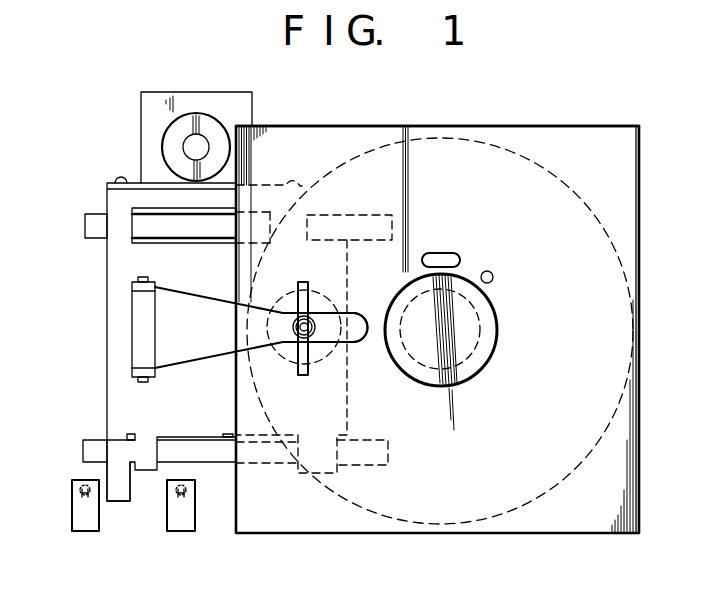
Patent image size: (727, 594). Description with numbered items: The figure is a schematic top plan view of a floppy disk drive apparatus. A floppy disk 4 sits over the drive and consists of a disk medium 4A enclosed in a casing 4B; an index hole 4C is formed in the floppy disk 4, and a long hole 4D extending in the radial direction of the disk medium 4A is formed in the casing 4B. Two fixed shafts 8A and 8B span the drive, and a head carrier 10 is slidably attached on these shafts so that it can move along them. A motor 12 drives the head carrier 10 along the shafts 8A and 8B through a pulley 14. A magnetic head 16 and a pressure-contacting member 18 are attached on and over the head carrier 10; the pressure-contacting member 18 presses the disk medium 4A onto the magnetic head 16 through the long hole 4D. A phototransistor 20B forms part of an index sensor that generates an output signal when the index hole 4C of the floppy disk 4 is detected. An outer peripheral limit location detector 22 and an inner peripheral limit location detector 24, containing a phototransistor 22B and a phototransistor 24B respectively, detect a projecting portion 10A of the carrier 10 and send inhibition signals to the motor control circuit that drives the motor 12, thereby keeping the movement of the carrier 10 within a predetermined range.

The floppy disk 4 is at (583, 126).
The disk medium 4A is at (596, 220).
The casing 4B is at (483, 126).
The index hole 4C is at (491, 270).
The long hole 4D is at (362, 312).
The fixed shaft 8A is at (85, 228).
The fixed shaft 8B is at (84, 440).
The head carrier 10 is at (107, 322).
The projecting portion 10A is at (118, 492).
The motor 12 is at (152, 122).
The pulley 14 is at (208, 122).
The magnetic head 16 is at (318, 357).
The pressure-contacting member 18 is at (200, 350).
The phototransistor 20B is at (438, 252).
The outer peripheral limit location detector 22 is at (83, 532).
The phototransistor 22B is at (80, 488).
The inner peripheral limit location detector 24 is at (182, 532).
The phototransistor 24B is at (176, 492).